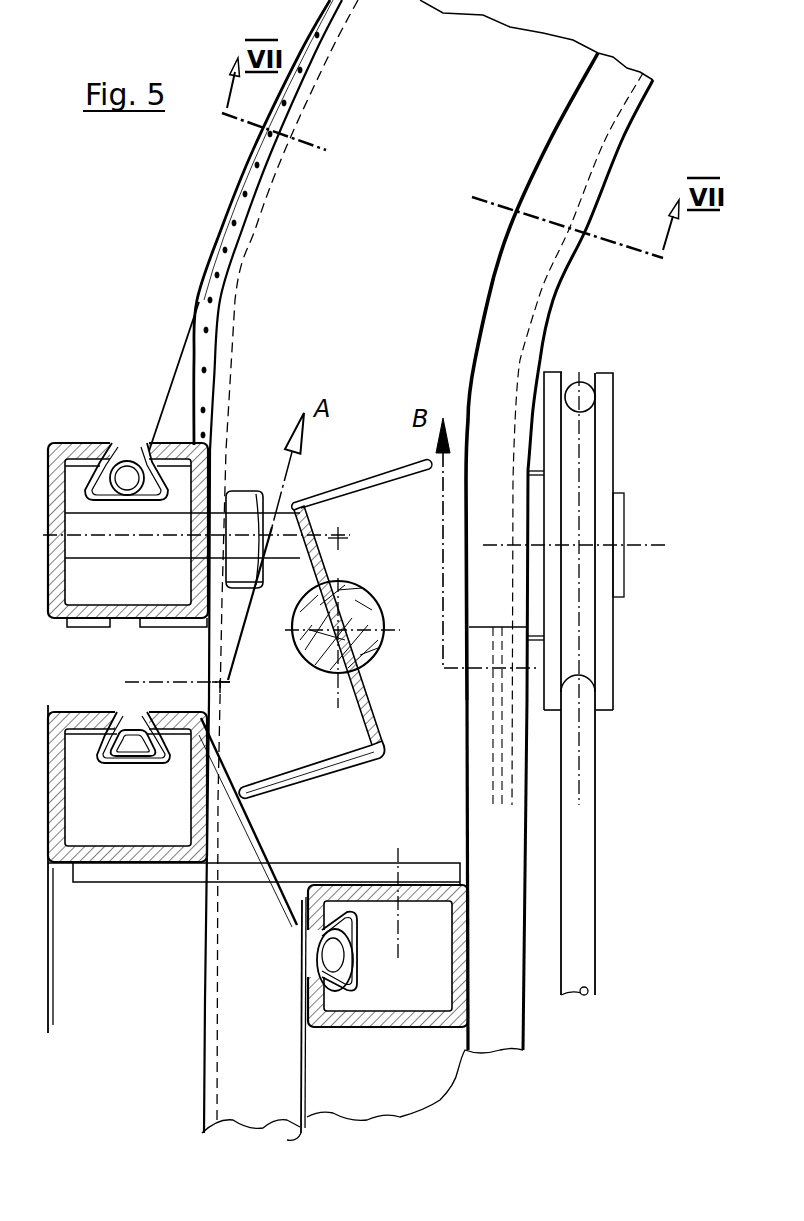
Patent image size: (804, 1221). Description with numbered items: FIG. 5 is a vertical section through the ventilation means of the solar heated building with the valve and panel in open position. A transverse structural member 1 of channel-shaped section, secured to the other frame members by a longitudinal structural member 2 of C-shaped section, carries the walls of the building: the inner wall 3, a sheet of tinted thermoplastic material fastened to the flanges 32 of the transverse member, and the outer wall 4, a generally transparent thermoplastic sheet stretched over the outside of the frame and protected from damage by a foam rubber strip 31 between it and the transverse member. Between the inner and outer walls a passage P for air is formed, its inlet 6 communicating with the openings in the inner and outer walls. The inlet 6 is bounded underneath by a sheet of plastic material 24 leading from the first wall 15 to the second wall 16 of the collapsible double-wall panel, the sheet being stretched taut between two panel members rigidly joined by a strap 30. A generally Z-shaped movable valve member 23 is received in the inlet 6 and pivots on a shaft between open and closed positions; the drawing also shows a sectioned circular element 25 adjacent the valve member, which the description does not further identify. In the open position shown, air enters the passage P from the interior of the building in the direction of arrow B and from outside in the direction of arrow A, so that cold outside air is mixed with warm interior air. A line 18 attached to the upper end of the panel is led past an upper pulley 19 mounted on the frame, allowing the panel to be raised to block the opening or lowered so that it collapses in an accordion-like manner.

The passage P is at (277, 202).
The transverse structural member 1 is at (497, 192).
The longitudinal structural member 2 is at (125, 612).
The inner wall 3 is at (500, 265).
The outer wall 4 is at (192, 325).
The inlet 6 is at (230, 623).
The first wall 15 is at (307, 1083).
The second wall 16 is at (53, 943).
The line 18 is at (588, 828).
The upper pulley 19 is at (603, 432).
The movable valve member 23 is at (365, 488).
The sheet of plastic material 24 is at (260, 828).
The tube 25 is at (372, 647).
The strap 30 is at (187, 880).
The foam rubber strip 31 is at (227, 212).
The flange 32 is at (500, 1042).